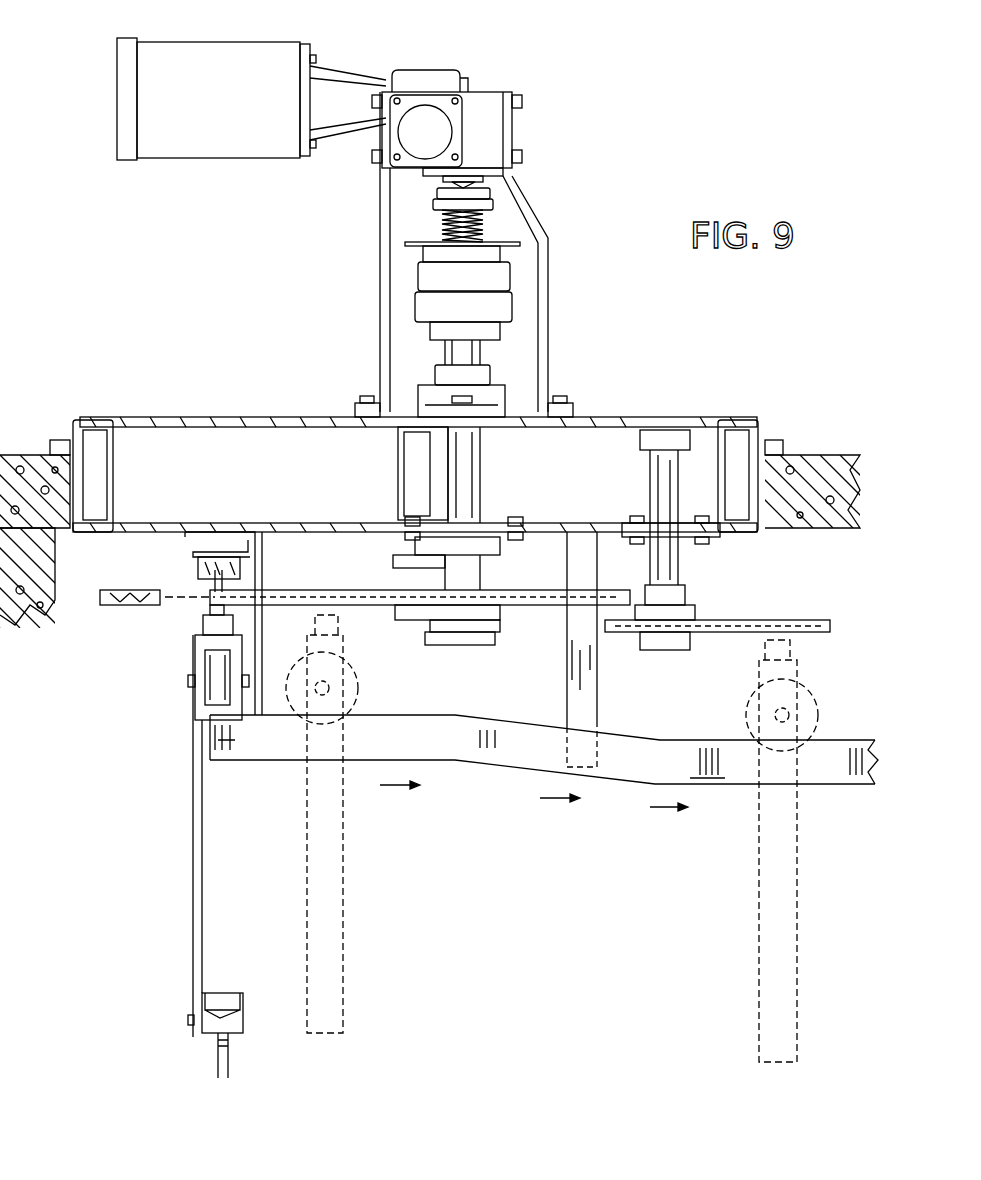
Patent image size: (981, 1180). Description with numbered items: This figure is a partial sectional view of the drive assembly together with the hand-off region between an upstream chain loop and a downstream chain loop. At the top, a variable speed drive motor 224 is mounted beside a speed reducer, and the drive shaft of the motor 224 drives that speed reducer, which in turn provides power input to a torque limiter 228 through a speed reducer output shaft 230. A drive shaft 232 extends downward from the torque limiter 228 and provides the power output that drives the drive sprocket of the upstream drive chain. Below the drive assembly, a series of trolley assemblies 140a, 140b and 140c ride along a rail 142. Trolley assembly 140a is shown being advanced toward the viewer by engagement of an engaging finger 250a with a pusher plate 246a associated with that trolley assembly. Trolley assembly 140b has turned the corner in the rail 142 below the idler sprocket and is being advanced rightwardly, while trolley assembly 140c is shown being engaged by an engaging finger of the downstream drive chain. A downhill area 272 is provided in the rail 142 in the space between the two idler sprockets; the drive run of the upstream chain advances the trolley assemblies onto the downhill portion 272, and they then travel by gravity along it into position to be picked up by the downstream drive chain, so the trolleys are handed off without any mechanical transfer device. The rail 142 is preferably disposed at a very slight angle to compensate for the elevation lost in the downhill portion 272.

The variable speed drive motor 224 is at (238, 42).
The speed reducer output shaft 230 is at (475, 184).
The torque limiter 228 is at (518, 272).
The drive shaft 232 is at (485, 487).
The engaging finger 250a is at (190, 612).
The pusher plate 246a is at (195, 630).
The trolley assembly 140a is at (168, 886).
The trolley assembly 140b is at (347, 897).
The trolley assembly 140c is at (752, 940).
The rail 142 is at (443, 765).
The downhill area 272 is at (590, 786).